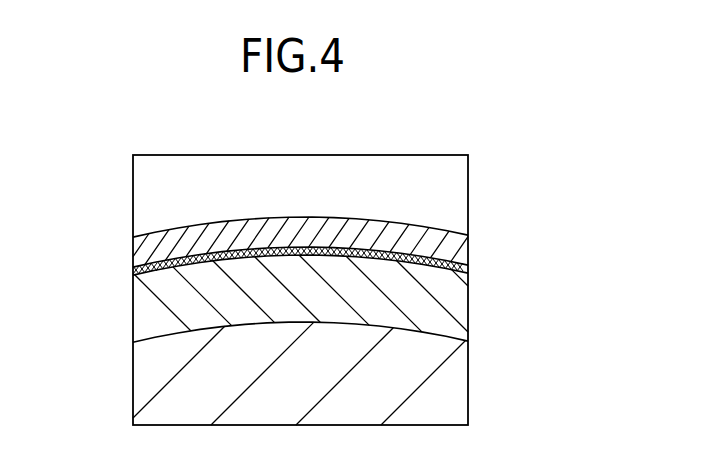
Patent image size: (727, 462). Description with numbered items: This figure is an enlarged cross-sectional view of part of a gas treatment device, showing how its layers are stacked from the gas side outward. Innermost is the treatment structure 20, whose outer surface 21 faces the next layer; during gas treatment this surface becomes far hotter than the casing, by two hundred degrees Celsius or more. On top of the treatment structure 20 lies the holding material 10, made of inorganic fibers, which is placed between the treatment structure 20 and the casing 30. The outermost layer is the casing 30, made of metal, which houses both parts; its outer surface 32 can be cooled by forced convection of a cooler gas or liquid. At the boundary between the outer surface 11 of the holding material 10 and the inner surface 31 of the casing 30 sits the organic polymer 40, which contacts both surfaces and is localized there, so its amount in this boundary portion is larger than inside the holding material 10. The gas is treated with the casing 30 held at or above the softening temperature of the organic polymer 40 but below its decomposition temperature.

The holding material 10 is at (447, 307).
The outer surface of the holding material 11 is at (437, 240).
The treatment structure 20 is at (445, 383).
The outer surface of the treatment structure 21 is at (162, 335).
The casing 30 is at (142, 245).
The inner surface of the casing 31 is at (172, 272).
The outer surface of the casing 32 is at (418, 226).
The organic polymer 40 is at (467, 271).